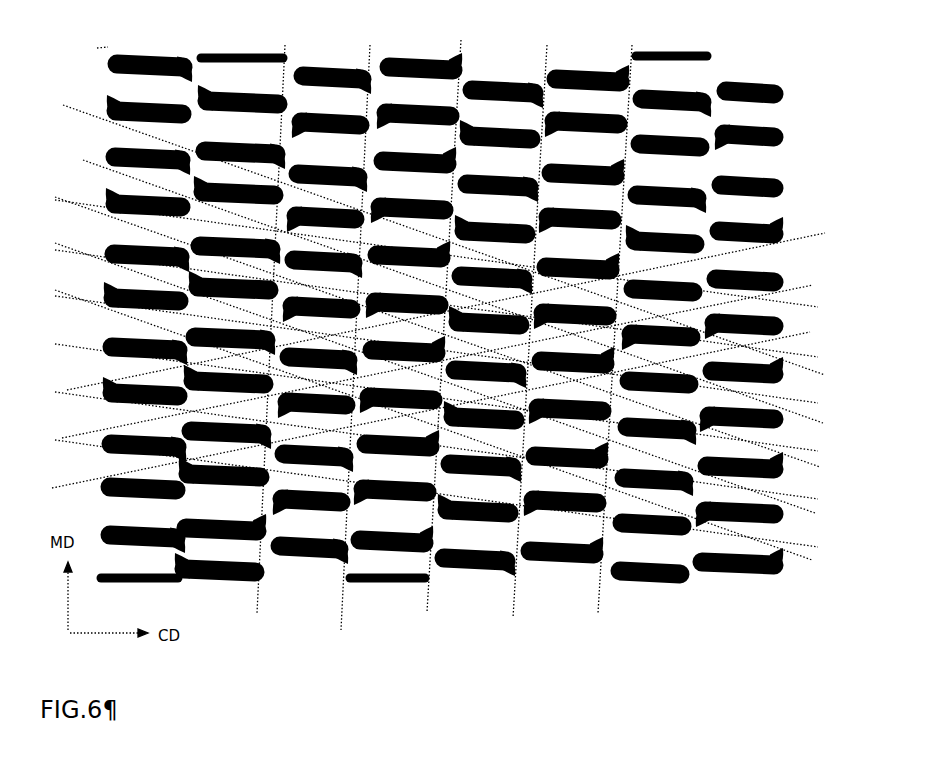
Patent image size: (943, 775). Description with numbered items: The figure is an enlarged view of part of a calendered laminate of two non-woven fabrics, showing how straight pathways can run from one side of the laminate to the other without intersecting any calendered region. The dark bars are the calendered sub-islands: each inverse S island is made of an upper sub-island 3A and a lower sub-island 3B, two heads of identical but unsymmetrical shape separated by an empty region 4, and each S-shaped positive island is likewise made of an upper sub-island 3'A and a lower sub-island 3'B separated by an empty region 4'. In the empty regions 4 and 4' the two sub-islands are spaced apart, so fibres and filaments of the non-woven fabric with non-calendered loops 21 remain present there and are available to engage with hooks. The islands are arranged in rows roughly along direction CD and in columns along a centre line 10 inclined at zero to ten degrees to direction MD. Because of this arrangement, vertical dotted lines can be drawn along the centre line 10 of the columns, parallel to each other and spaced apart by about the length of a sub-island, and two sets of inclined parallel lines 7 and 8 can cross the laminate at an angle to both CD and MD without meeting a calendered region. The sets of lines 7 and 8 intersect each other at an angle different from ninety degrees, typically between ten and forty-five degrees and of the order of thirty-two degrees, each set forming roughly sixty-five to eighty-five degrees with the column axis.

The loops 21 is at (442, 345).
The upper sub-island 3A is at (345, 72).
The lower sub-island 3B is at (400, 106).
The upper sub-island 3'A is at (670, 127).
The lower sub-island 3'B is at (587, 164).
The centre line of the columns 10 is at (463, 54).
The empty region 4 is at (552, 331).
The empty region 4' is at (635, 329).
The inclined parallel lines 7 is at (63, 105).
The inclined parallel lines 8 is at (83, 436).